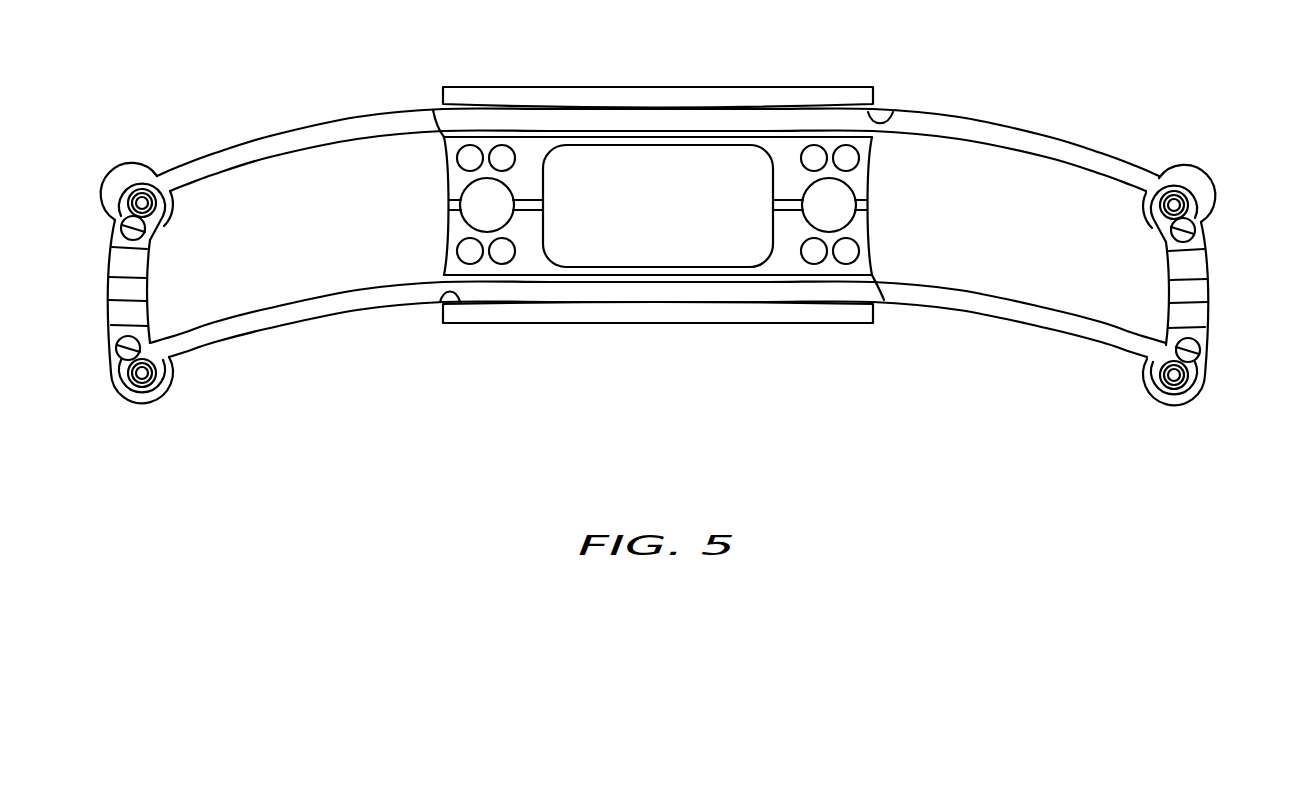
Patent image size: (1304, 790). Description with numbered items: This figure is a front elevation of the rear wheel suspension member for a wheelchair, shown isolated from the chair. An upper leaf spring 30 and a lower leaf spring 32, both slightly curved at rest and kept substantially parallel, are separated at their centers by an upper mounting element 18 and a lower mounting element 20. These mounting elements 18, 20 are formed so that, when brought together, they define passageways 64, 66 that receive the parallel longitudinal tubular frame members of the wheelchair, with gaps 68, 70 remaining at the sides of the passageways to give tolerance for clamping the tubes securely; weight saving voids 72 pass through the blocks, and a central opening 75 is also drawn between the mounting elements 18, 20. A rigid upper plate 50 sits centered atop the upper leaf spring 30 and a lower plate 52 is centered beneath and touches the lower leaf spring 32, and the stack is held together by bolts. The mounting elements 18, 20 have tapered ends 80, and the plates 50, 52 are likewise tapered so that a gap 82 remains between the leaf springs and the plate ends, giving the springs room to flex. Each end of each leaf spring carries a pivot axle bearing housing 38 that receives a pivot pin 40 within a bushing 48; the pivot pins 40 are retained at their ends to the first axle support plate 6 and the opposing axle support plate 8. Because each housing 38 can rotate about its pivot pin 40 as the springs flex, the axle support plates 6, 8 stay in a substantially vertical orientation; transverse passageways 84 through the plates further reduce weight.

The axle support plate 6 is at (108, 285).
The axle support plate 8 is at (1208, 290).
The upper mounting element 18 is at (870, 170).
The lower mounting element 20 is at (870, 245).
The upper leaf spring 30 is at (357, 117).
The lower leaf spring 32 is at (318, 319).
The pivot axle bearing housing 38 is at (137, 175).
The pivot pin 40 is at (136, 206).
The bushing 48 is at (148, 190).
The upper plate 50 is at (624, 87).
The lower plate 52 is at (656, 323).
The passageway 64 is at (485, 210).
The passageway 66 is at (832, 207).
The gap 68 is at (455, 205).
The gap 70 is at (535, 205).
The weight saving void 72 is at (470, 146).
The central window 75 is at (625, 238).
The tapered end 80 is at (452, 133).
The gap 82 is at (895, 115).
The transverse passageway 84 is at (125, 233).